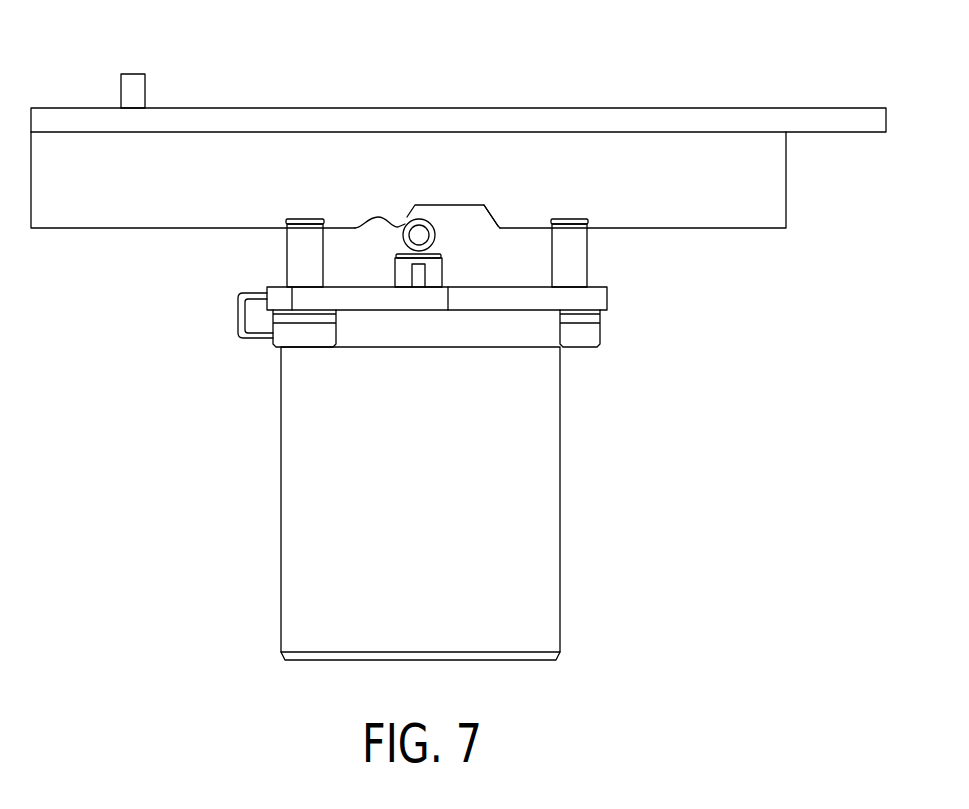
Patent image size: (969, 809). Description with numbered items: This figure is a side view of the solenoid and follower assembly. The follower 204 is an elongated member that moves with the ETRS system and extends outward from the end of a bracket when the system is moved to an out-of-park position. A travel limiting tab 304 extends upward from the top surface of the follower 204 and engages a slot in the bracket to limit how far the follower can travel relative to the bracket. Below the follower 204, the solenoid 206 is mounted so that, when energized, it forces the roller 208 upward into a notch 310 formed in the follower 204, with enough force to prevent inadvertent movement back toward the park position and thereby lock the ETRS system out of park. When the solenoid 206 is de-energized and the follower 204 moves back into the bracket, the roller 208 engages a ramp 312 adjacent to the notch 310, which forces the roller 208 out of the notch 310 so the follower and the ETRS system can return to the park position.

The follower 204 is at (688, 124).
The travel limiting tab 304 is at (133, 85).
The ramp 312 is at (490, 213).
The roller 208 is at (440, 242).
The notch 310 is at (475, 225).
The solenoid 206 is at (540, 567).